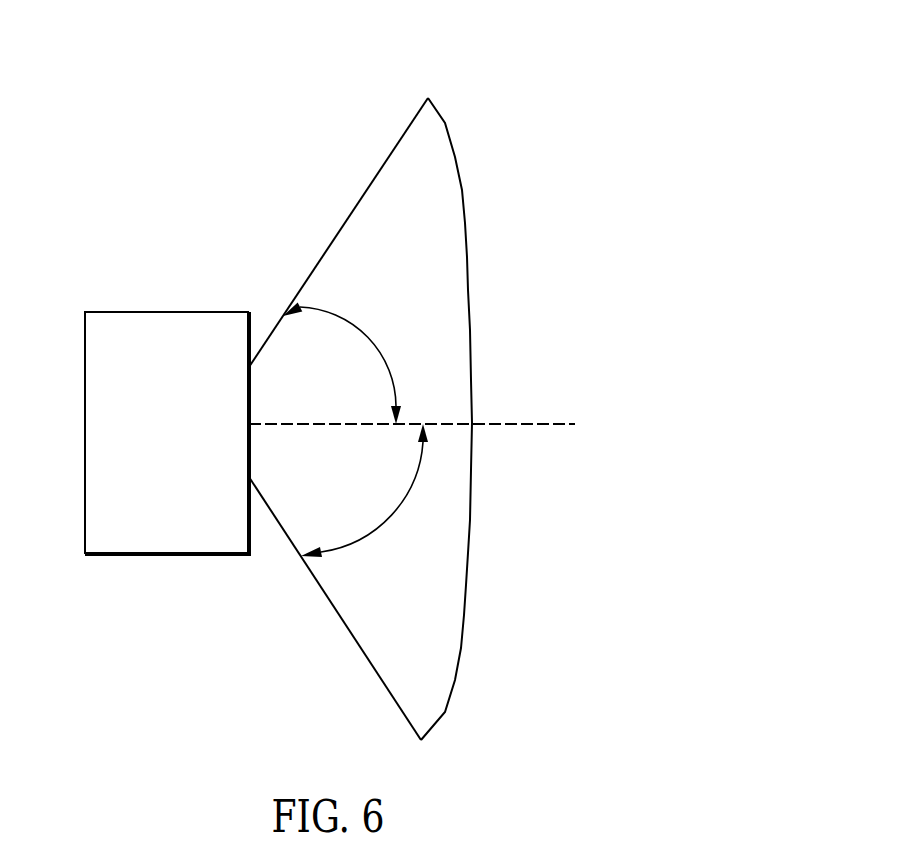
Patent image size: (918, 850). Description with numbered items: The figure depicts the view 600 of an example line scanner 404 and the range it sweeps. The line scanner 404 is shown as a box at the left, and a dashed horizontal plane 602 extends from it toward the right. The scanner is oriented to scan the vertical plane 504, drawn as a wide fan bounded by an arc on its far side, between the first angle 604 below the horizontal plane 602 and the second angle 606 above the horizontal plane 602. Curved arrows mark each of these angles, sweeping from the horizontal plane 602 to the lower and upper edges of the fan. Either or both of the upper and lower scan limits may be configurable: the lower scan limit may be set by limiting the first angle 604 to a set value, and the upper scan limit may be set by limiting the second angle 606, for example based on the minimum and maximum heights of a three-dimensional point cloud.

The line scanner 404 is at (85, 431).
The vertical plane 504 is at (468, 550).
The view 600 is at (562, 52).
The horizontal plane 602 is at (522, 424).
The first angle 604 is at (387, 513).
The second angle 606 is at (370, 338).